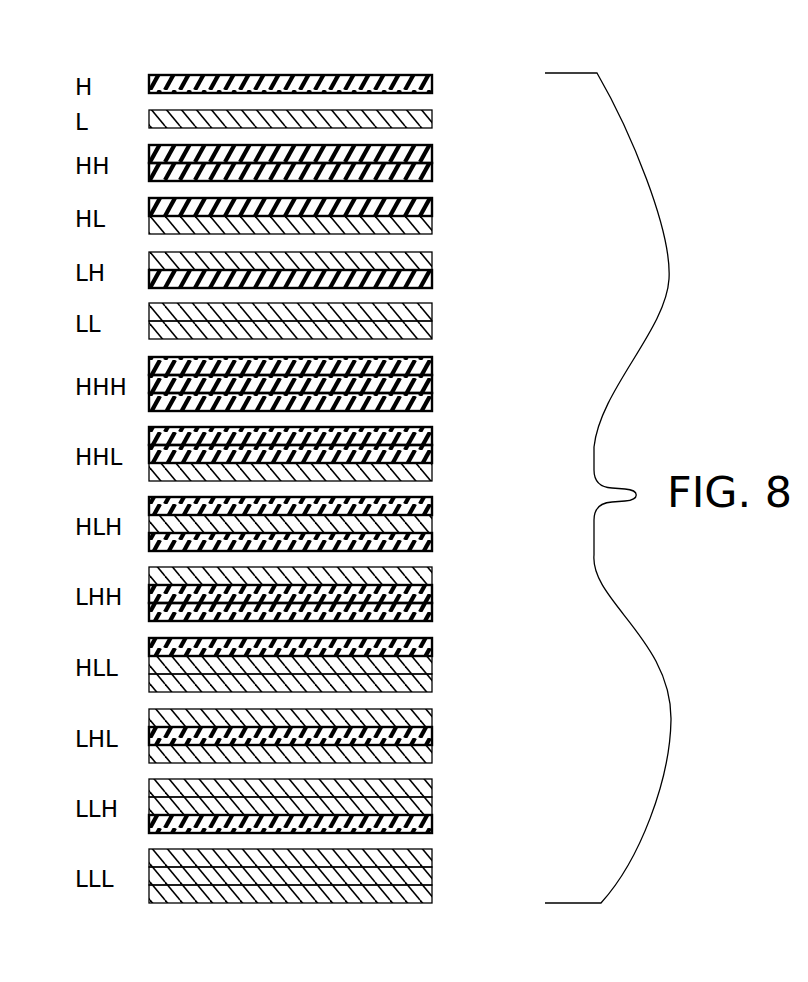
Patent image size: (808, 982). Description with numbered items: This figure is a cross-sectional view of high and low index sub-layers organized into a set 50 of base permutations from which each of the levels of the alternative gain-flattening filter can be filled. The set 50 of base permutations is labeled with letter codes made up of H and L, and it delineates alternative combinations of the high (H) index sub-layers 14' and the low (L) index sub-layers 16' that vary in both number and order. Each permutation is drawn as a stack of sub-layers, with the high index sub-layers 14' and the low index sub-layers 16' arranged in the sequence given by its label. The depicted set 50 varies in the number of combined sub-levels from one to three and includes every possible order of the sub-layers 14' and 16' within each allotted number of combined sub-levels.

The set of base permutations 50 is at (283, 50).
The high index sub-layer 14' is at (328, 454).
The low index sub-layer 16' is at (363, 496).